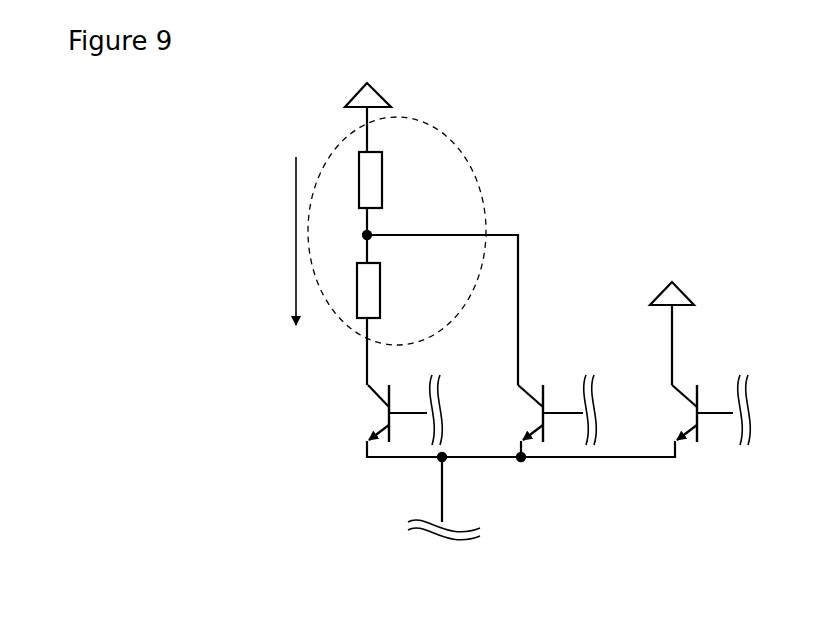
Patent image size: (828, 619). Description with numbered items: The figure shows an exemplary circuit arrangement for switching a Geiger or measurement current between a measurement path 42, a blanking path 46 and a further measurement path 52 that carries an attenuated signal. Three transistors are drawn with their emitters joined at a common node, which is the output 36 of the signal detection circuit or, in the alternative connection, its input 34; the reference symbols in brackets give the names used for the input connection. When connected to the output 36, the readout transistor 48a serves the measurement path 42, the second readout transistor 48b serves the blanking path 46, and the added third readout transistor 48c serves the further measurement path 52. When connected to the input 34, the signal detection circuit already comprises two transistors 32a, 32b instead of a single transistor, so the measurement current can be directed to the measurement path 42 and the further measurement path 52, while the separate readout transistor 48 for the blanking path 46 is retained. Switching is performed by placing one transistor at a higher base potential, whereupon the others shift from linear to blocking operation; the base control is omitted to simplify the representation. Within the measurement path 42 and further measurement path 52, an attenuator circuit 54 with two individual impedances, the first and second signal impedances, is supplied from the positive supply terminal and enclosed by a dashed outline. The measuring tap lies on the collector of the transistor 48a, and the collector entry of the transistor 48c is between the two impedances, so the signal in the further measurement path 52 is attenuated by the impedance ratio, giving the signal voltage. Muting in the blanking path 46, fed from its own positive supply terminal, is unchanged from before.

The measurement path 42 is at (291, 102).
The blanking path 46 is at (687, 265).
The further measurement path 52 is at (555, 158).
The attenuator circuit 54 is at (333, 312).
The readout transistor 48a is at (362, 408).
The transistor 32a is at (348, 433).
The readout transistor 48c is at (533, 377).
The transistor 32b is at (534, 379).
The readout transistor 48b is at (700, 450).
The readout transistor 48 is at (712, 453).
The output 36 is at (444, 521).
The input 34 is at (444, 538).